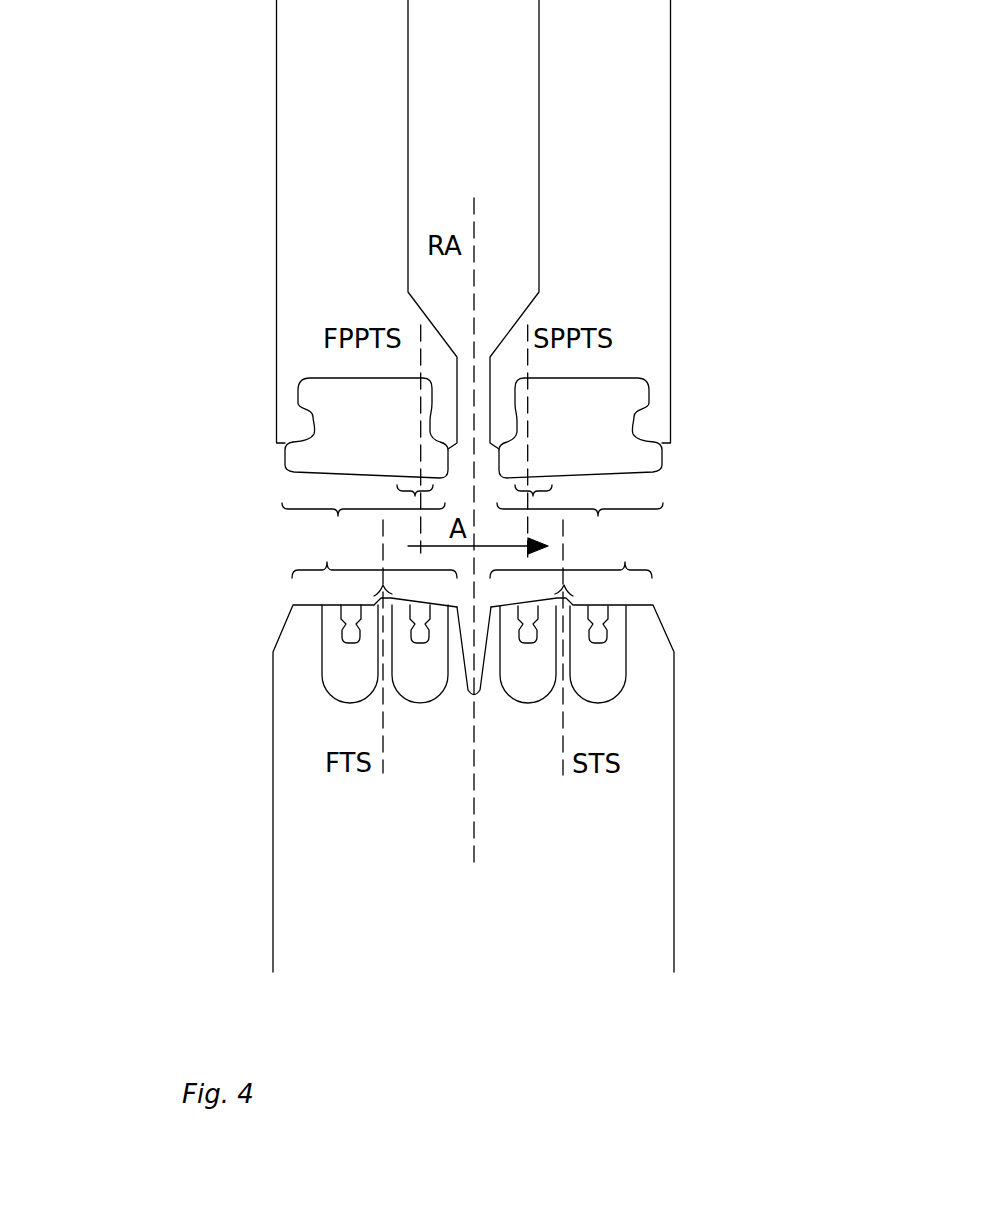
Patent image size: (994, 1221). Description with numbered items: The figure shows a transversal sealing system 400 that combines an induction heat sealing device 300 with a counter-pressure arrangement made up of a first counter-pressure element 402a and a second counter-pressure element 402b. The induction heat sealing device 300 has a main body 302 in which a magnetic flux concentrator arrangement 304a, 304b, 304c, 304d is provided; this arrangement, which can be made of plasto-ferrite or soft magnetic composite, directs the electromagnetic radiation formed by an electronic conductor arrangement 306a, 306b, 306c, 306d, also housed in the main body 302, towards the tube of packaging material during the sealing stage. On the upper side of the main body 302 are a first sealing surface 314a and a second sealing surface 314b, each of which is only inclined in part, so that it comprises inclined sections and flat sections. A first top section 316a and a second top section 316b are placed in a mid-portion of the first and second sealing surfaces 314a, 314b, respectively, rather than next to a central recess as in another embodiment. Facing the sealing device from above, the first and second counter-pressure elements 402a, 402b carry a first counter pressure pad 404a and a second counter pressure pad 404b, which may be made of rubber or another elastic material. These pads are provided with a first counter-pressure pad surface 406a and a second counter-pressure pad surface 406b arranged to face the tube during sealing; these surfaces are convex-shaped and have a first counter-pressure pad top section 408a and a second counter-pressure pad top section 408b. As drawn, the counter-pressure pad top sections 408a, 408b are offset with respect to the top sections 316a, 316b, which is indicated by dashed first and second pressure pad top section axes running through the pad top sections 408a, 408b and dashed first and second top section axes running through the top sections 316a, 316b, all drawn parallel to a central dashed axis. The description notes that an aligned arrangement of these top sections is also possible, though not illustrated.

The induction heat sealing device 300 is at (75, 633).
The main body 302 is at (320, 912).
The magnetic flux concentrator arrangement 304a is at (348, 682).
The magnetic flux concentrator arrangement 304b is at (436, 680).
The magnetic flux concentrator arrangement 304c is at (542, 682).
The magnetic flux concentrator arrangement 304d is at (615, 642).
The electronic conductor arrangement 306a is at (342, 633).
The electronic conductor arrangement 306b is at (415, 640).
The electronic conductor arrangement 306c is at (527, 640).
The electronic conductor arrangement 306d is at (593, 637).
The first sealing surface 314a is at (325, 556).
The second sealing surface 314b is at (628, 557).
The first top section 316a is at (380, 594).
The second top section 316b is at (567, 590).
The transversal sealing system 400 is at (141, 300).
The first counter-pressure element 402a is at (290, 157).
The second counter-pressure element 402b is at (651, 153).
The first counter pressure pad 404a is at (327, 463).
The second counter pressure pad 404b is at (633, 463).
The first counter-pressure pad surface 406a is at (340, 521).
The second counter-pressure pad surface 406b is at (607, 530).
The first counter-pressure pad top section 408a is at (416, 498).
The second counter-pressure pad top section 408b is at (535, 503).